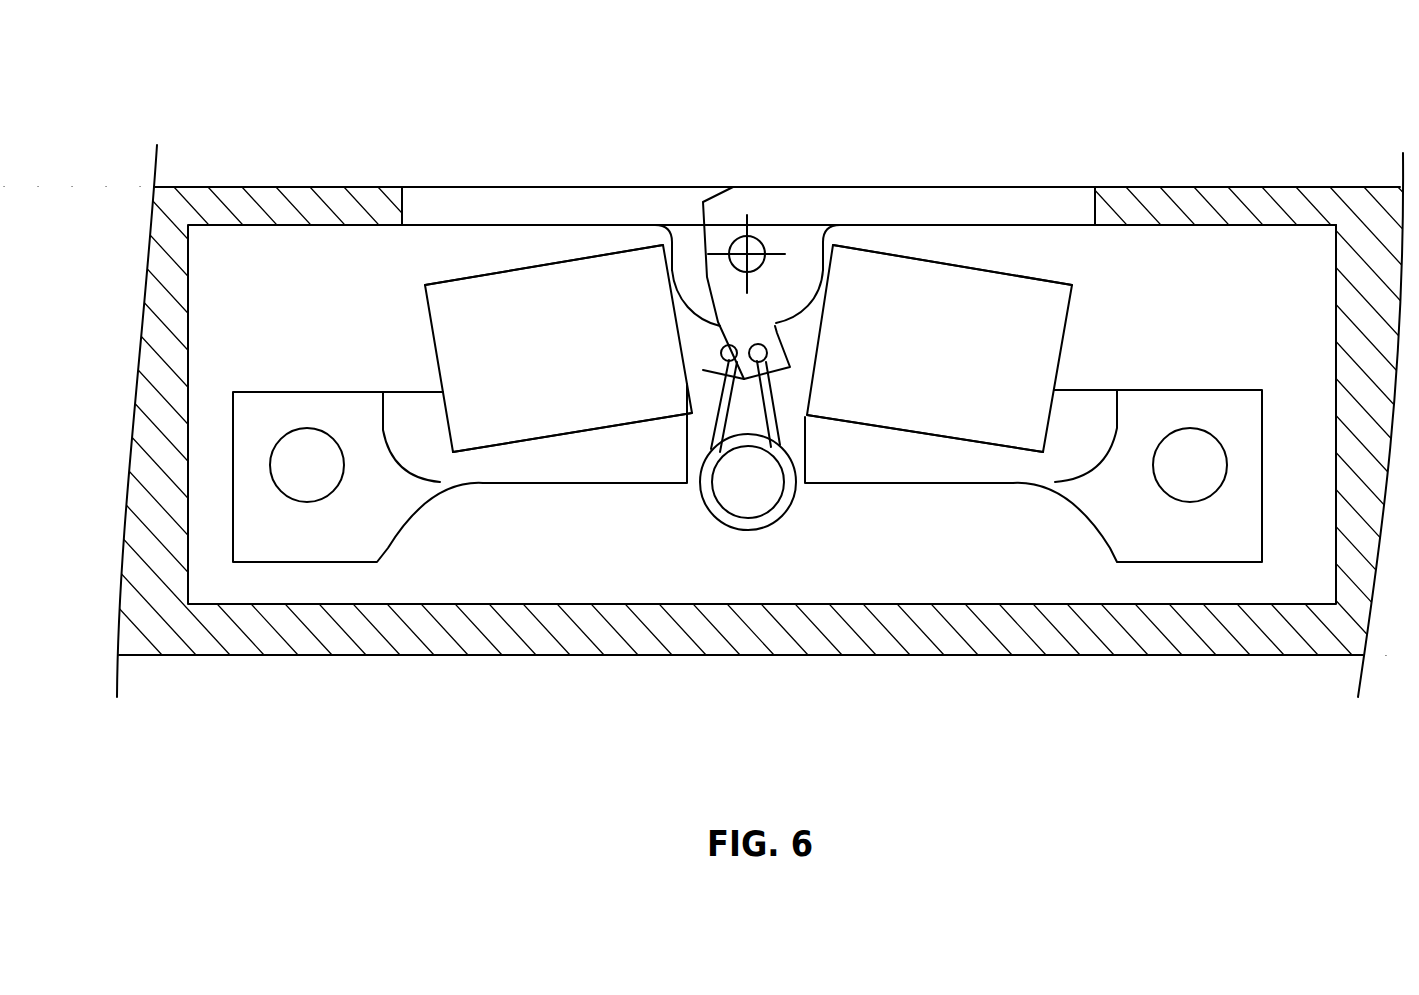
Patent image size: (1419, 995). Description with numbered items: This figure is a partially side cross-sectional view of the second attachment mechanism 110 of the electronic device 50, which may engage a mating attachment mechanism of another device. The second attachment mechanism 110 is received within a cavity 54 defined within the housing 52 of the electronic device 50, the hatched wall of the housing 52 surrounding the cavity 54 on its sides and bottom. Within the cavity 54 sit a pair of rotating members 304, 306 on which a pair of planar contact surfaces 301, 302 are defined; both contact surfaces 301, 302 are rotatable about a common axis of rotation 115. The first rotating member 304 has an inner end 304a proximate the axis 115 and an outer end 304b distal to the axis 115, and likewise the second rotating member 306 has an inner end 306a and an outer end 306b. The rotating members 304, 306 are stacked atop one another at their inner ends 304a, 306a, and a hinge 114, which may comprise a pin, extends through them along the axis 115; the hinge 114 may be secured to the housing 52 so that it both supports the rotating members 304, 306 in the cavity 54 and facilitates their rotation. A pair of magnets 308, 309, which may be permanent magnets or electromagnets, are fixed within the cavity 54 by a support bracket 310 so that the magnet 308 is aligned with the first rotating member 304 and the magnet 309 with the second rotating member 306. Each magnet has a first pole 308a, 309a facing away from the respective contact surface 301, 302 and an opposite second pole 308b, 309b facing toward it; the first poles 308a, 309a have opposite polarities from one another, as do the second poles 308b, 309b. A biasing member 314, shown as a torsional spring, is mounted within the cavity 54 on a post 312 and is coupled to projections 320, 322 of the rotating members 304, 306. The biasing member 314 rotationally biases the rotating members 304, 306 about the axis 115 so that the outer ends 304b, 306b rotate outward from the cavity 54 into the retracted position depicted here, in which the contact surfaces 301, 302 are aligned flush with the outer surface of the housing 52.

The electronic device 50 is at (212, 72).
The housing 52 is at (228, 186).
The cavity 54 is at (212, 292).
The second attachment mechanism 110 is at (1062, 104).
The first contact surface 301 is at (563, 186).
The second contact surface 302 is at (891, 186).
The first rotating member 304 is at (505, 184).
The inner end of first rotating member 304a is at (727, 223).
The outer end of first rotating member 304b is at (397, 184).
The second rotating member 306 is at (937, 184).
The inner end of second rotating member 306a is at (719, 163).
The outer end of second rotating member 306b is at (1098, 184).
The hinge 114 is at (734, 243).
The axis of rotation 115 is at (776, 252).
The first magnet 308 is at (432, 336).
The first pole of first magnet 308a is at (466, 456).
The second pole of first magnet 308b is at (441, 280).
The second magnet 309 is at (1067, 322).
The first pole of second magnet 309a is at (935, 439).
The second pole of second magnet 309b is at (985, 266).
The support bracket 310 is at (390, 546).
The post 312 is at (773, 514).
The biasing member 314 is at (710, 511).
The projection of first rotating member 320 is at (703, 370).
The projection of second rotating member 322 is at (768, 364).